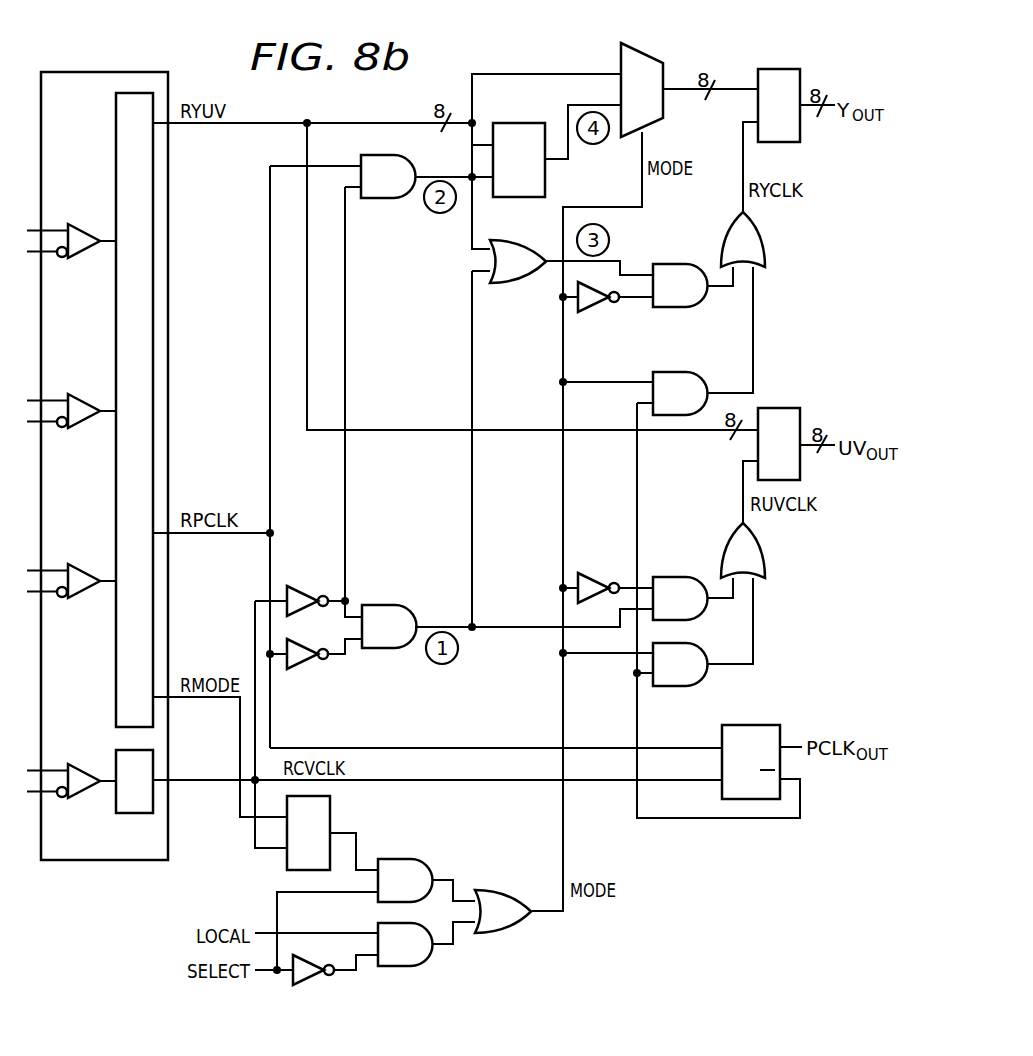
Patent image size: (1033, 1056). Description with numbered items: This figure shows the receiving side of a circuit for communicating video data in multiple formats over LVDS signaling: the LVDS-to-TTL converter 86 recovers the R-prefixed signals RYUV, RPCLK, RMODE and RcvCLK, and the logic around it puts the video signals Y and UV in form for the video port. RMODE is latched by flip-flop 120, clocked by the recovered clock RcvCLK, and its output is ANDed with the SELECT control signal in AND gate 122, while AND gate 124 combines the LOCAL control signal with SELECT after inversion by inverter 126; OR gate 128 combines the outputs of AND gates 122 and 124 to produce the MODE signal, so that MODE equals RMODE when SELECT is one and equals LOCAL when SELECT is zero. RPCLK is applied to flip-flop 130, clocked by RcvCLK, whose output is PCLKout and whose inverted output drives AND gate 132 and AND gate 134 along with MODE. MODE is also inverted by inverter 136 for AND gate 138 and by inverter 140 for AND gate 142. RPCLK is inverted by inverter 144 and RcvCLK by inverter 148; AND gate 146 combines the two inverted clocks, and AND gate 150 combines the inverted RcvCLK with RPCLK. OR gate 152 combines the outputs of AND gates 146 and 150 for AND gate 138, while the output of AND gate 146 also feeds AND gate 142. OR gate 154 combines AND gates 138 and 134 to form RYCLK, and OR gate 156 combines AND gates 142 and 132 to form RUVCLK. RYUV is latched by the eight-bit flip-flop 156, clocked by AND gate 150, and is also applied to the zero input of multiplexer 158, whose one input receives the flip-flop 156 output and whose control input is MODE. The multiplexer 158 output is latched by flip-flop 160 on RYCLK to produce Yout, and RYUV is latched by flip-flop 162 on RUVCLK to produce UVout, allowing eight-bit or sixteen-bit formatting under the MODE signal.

The LVDS-to-TTL converter 86 is at (95, 159).
The flip-flop 120 is at (285, 862).
The AND gate 122 is at (400, 859).
The AND gate 124 is at (400, 966).
The inverter 126 is at (316, 983).
The OR gate 128 is at (500, 933).
The flip-flop 130 is at (750, 725).
The AND gate 132 is at (672, 686).
The AND gate 134 is at (672, 372).
The inverter 136 is at (597, 308).
The AND gate 138 is at (672, 264).
The inverter 140 is at (595, 575).
The AND gate 142 is at (674, 577).
The inverter 144 is at (305, 666).
The AND gate 146 is at (385, 649).
The inverter 148 is at (300, 587).
The AND gate 150 is at (385, 199).
The OR gate 152 is at (511, 284).
The OR gate 154 is at (765, 242).
The flip-flop / OR gate 156 is at (547, 175).
The multiplexer 158 is at (642, 55).
The flip-flop 160 is at (780, 69).
The flip-flop 162 is at (780, 408).